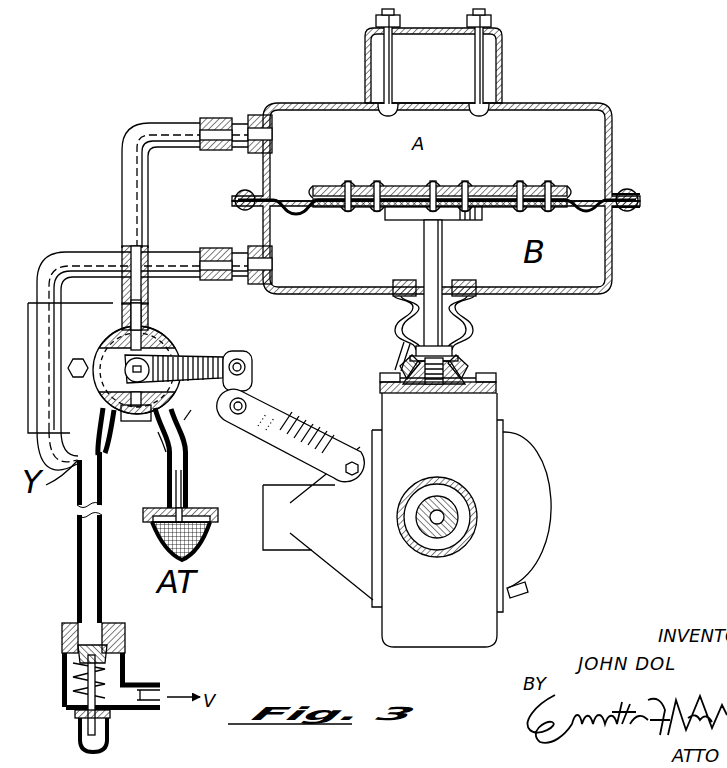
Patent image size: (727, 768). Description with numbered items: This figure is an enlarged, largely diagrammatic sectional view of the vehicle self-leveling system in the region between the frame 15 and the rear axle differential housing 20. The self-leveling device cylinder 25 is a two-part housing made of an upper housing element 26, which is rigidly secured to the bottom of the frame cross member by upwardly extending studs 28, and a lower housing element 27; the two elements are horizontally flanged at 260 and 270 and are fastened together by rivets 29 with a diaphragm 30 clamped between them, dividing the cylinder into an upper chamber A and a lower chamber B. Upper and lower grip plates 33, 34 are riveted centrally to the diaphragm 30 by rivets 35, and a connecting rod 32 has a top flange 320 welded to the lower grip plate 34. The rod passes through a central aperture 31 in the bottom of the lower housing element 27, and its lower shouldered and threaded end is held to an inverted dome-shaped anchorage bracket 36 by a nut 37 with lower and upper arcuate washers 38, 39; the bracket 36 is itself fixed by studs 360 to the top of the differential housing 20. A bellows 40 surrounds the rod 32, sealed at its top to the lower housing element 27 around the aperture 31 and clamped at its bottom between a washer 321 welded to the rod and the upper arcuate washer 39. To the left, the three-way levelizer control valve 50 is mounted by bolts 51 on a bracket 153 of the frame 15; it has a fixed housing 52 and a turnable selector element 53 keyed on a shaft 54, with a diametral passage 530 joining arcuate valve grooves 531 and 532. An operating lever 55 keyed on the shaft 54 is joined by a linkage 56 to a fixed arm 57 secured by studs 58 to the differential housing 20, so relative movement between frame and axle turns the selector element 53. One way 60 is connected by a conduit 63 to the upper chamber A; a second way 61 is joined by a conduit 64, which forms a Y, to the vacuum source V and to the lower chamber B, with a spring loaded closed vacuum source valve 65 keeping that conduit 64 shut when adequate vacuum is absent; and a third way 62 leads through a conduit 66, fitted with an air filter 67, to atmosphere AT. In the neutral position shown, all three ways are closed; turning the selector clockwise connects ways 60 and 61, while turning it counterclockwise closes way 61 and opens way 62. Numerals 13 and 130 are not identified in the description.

The shaft hole 13 is at (446, 530).
The frame 15 is at (508, 82).
The rear axle differential housing 20 is at (513, 453).
The self-leveling device cylinder 25 is at (451, 178).
The upper housing element 26 is at (613, 136).
The lower housing element 27 is at (612, 266).
The studs 28 is at (476, 72).
The rivets 29 is at (634, 188).
The diaphragm 30 is at (641, 200).
The aperture 31 is at (394, 287).
The connecting rod 32 is at (441, 258).
The upper grip plate 33 is at (396, 186).
The lower grip plate 34 is at (392, 210).
The rivets 35 is at (378, 181).
The inverted dome-shaped anchorage bracket 36 is at (463, 377).
The nut 37 is at (446, 381).
The lower arcuate washer 38 is at (416, 378).
The upper arcuate washer 39 is at (403, 360).
The bellows 40 is at (396, 301).
The three-way levelizer control valve 50 is at (161, 370).
The bolts 51 is at (68, 368).
The fixed housing 52 is at (95, 352).
The turnable selector element 53 is at (112, 352).
The shaft 54 is at (118, 393).
The operating lever 55 is at (196, 357).
The linkage 56 is at (250, 364).
The fixed arm 57 is at (268, 413).
The studs 58 is at (346, 470).
The way 60 is at (140, 311).
The second way 61 is at (102, 420).
The third way 62 is at (170, 450).
The conduit 63 is at (135, 186).
The conduit 64 is at (66, 254).
The spring loaded closed vacuum source valve 65 is at (63, 662).
The conduit 66 is at (188, 474).
The air filter 67 is at (170, 549).
The bearing boss 130 is at (427, 480).
The bracket 153 is at (188, 411).
The flange 260 is at (642, 193).
The flange 270 is at (641, 207).
The top flange 320 is at (481, 220).
The washer 321 is at (455, 347).
The studs 360 is at (383, 373).
The passage 530 is at (121, 330).
The arcuate valve groove 531 is at (141, 351).
The arcuate valve groove 532 is at (134, 421).